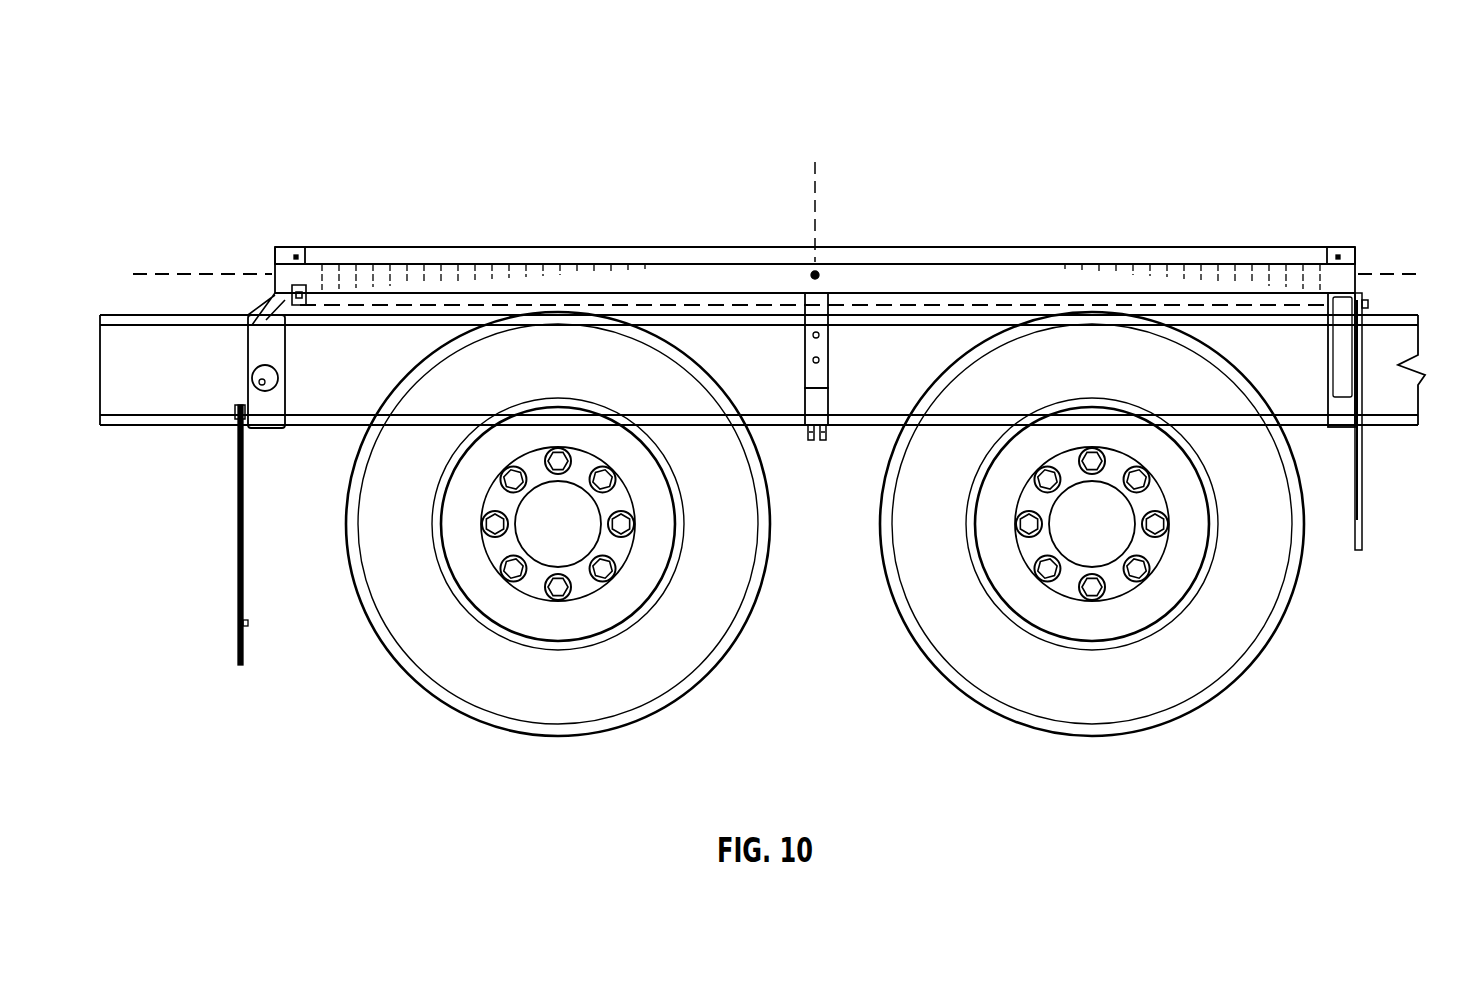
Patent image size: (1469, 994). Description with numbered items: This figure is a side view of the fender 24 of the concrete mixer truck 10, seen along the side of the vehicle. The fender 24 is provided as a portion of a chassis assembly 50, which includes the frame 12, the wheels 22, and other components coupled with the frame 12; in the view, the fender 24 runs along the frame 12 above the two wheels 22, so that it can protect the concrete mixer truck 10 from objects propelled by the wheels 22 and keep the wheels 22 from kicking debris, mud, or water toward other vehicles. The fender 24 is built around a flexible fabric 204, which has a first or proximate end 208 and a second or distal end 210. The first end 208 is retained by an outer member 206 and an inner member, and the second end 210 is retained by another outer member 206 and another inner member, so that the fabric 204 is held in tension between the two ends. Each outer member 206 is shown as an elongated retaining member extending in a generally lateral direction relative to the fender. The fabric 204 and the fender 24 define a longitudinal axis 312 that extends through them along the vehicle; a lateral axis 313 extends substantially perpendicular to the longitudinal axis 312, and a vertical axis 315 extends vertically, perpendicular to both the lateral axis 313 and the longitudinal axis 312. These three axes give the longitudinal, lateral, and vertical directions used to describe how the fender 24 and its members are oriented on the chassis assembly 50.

The concrete mixer truck 10 is at (203, 233).
The frame 12 is at (183, 417).
The wheels 22 is at (725, 606).
The fender 24 is at (566, 230).
The chassis assembly 50 is at (485, 125).
The fabric 204 is at (940, 247).
The outer member 206 is at (292, 248).
The first end 208 is at (270, 250).
The second end 210 is at (1366, 257).
The longitudinal axis 312 is at (170, 272).
The lateral axis 313 is at (812, 272).
The vertical axis 315 is at (818, 190).